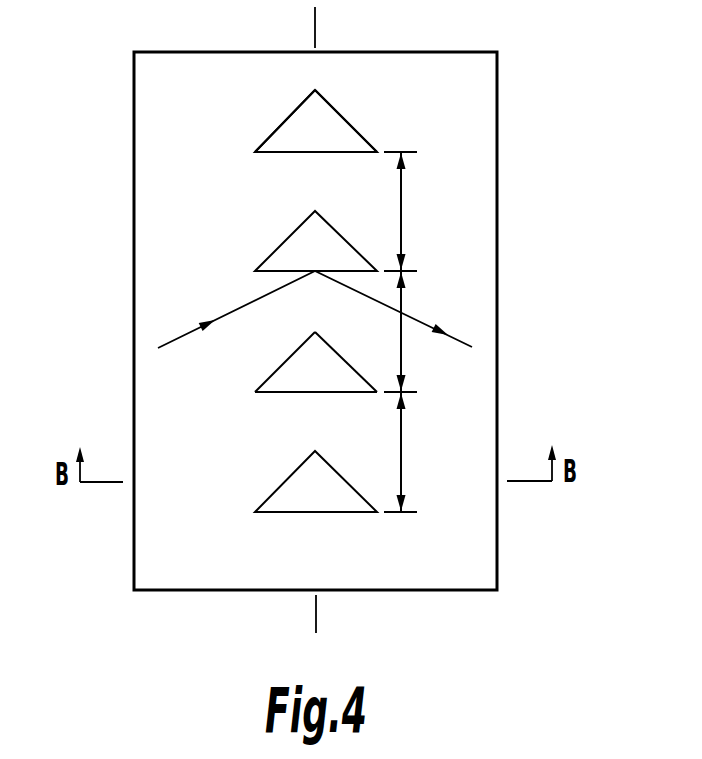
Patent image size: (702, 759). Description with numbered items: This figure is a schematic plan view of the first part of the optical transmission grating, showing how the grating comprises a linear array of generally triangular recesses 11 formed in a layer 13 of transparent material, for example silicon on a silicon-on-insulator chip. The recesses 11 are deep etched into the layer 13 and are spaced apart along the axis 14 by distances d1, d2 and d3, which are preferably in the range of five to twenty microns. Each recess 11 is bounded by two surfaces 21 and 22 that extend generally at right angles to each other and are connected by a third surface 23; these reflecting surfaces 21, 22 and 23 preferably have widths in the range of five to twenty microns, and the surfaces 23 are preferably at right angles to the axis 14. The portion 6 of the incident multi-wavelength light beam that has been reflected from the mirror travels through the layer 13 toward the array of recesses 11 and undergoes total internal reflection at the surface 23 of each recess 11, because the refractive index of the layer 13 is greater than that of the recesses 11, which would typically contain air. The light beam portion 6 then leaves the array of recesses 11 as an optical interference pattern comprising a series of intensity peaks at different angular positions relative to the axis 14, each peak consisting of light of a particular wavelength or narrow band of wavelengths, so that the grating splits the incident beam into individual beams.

The light beam portion 6 is at (186, 334).
The triangular recess 11 is at (312, 124).
The layer of transparent material 13 is at (480, 138).
The axis 14 is at (315, 23).
The first surface 21 is at (285, 121).
The second surface 22 is at (355, 129).
The third surface 23 is at (278, 155).
The distance between recesses d1 is at (401, 206).
The distance between recesses d2 is at (401, 352).
The distance between recesses d3 is at (401, 450).